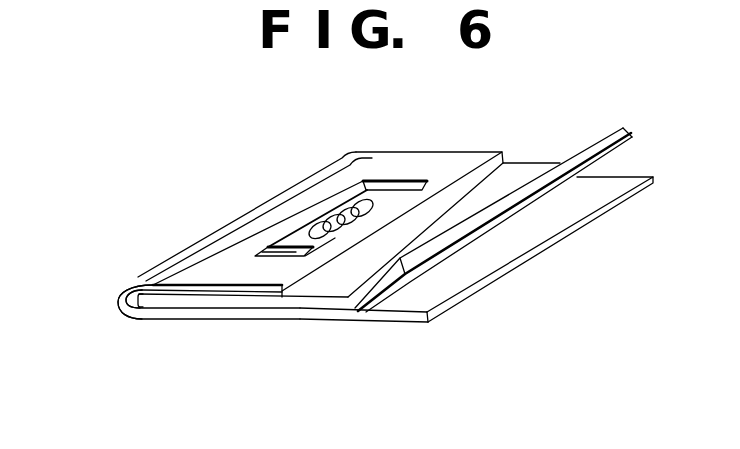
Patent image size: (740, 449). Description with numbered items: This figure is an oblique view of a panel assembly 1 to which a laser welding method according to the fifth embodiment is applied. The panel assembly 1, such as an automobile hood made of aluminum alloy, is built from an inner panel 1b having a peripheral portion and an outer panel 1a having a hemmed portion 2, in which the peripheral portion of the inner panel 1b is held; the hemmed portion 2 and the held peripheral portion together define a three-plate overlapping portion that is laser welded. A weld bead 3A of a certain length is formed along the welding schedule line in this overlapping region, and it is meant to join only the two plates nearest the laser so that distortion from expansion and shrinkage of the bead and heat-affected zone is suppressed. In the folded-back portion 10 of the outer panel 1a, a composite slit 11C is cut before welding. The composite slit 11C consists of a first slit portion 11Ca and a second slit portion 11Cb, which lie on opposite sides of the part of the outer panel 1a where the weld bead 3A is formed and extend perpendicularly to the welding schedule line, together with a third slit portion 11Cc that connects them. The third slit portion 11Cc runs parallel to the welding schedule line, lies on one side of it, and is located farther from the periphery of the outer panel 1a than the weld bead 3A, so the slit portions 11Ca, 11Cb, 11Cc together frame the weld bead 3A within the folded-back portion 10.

The panel assembly 1 is at (481, 190).
The outer panel 1a is at (613, 191).
The inner panel 1b is at (493, 203).
The hemmed portion 2 is at (424, 172).
The weld bead 3A is at (337, 210).
The folded-back portion 10 is at (266, 268).
The composite slit 11C is at (306, 220).
The first slit portion 11Ca is at (152, 282).
The second slit portion 11Cb is at (390, 183).
The third slit portion 11Cc is at (284, 251).